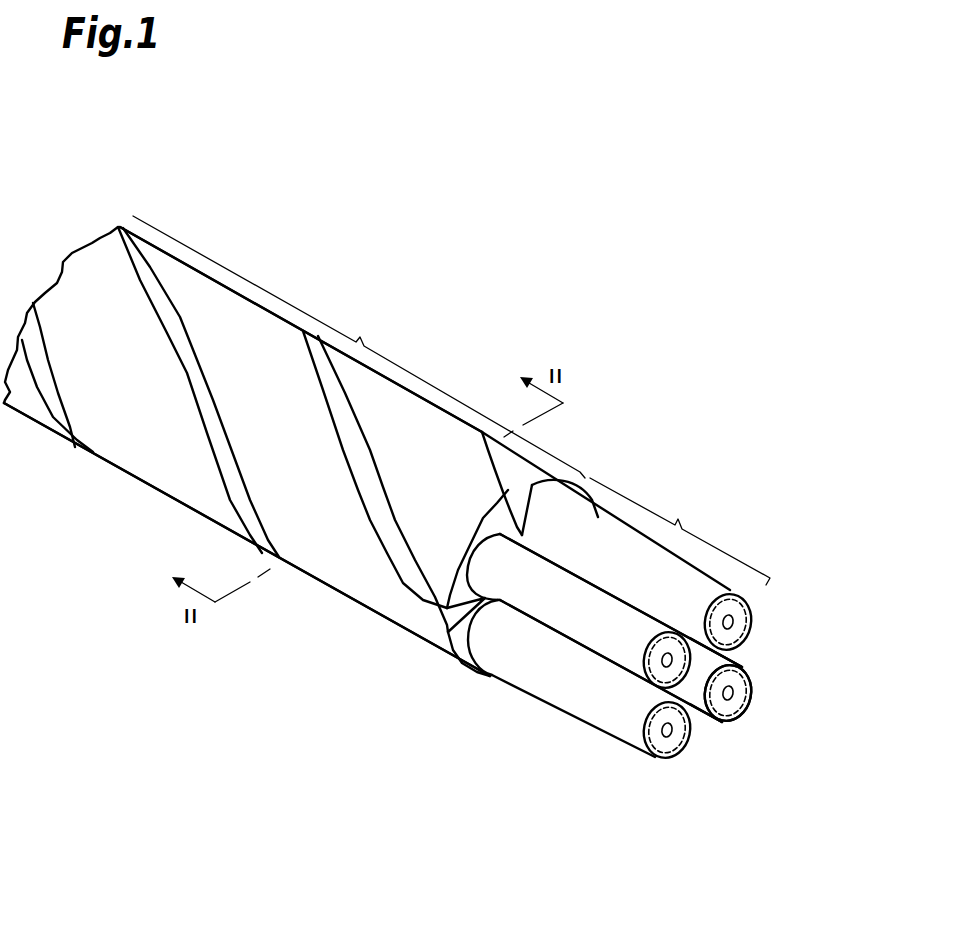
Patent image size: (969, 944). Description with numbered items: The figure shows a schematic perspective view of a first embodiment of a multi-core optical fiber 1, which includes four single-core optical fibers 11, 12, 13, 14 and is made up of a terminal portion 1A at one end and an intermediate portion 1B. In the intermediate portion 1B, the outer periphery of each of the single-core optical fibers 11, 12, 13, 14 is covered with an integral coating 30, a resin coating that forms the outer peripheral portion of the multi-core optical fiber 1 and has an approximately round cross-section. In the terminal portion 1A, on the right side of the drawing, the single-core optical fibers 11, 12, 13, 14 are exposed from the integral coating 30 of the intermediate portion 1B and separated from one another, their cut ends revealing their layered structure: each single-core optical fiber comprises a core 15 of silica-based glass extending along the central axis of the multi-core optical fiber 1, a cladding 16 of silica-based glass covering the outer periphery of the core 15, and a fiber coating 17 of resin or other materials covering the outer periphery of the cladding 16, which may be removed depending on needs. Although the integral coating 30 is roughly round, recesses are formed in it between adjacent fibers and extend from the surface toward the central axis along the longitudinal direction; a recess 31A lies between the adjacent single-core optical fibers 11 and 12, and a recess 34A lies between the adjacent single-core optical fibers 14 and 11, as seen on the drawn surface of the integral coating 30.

The multi-core optical fiber 1 is at (690, 350).
The terminal portion 1A is at (680, 531).
The intermediate portion 1B is at (359, 347).
The single-core optical fiber 11 is at (570, 615).
The single-core optical fiber 12 is at (738, 584).
The single-core optical fiber 13 is at (740, 653).
The single-core optical fiber 14 is at (604, 698).
The core 15 is at (680, 668).
The cladding 16 is at (650, 684).
The fiber coating 17 is at (753, 695).
The integral coating 30 is at (325, 547).
The recess 31A is at (512, 484).
The recess 34A is at (388, 555).